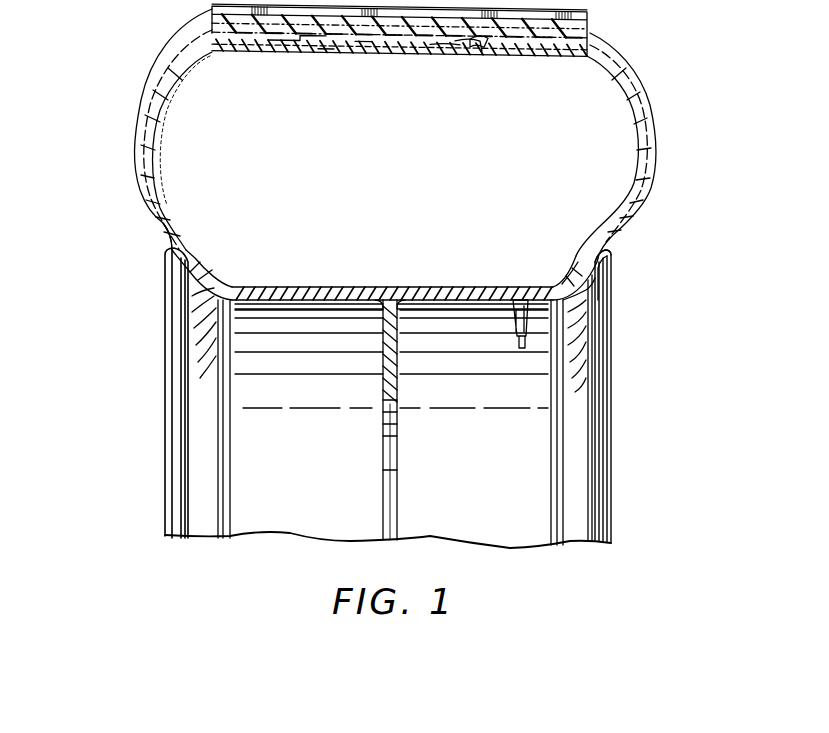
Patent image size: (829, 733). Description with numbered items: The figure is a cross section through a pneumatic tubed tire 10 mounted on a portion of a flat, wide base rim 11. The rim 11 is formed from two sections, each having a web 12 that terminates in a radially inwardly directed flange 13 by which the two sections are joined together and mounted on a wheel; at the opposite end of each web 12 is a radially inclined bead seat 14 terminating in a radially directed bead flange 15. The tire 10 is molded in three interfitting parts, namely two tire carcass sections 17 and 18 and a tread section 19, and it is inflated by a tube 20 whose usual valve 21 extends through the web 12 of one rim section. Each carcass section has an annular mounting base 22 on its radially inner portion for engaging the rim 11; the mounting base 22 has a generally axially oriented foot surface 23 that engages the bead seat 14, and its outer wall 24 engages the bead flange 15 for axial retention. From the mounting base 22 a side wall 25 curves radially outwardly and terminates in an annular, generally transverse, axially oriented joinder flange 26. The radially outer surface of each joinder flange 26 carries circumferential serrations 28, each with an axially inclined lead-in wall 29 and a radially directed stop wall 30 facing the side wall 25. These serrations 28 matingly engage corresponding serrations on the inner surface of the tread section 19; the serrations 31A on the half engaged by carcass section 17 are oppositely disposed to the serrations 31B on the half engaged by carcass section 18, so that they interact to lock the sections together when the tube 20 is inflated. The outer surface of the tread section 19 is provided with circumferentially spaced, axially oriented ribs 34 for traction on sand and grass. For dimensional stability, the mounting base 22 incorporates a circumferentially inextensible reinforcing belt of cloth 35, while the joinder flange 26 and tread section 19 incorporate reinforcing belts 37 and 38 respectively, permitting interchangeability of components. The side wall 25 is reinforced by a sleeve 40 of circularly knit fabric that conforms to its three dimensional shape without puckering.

The tire 10 is at (676, 121).
The rim 11 is at (617, 379).
The web 12 is at (315, 405).
The flange 13 is at (382, 482).
The bead seat 14 is at (580, 303).
The bead flange 15 is at (613, 253).
The tire carcass section 17 is at (138, 172).
The tire carcass section 18 is at (652, 192).
The tread section 19 is at (596, 22).
The tube 20 is at (183, 229).
The valve 21 is at (513, 332).
The mounting base 22 is at (200, 270).
The foot surface 23 is at (580, 297).
The outer wall 24 is at (617, 268).
The side wall 25 is at (137, 119).
The joinder flange 26 is at (252, 42).
The serration 28 is at (557, 36).
The lead-in wall 29 is at (498, 58).
The stop wall 30 is at (442, 52).
The serrations 31A is at (279, 34).
The serrations 31B is at (472, 36).
The rib 34 is at (212, 4).
The reinforcing belt of cloth 35 is at (570, 272).
The reinforcing belt 37 is at (325, 44).
The reinforcing belt 38 is at (363, 40).
The sleeve 40 is at (147, 127).